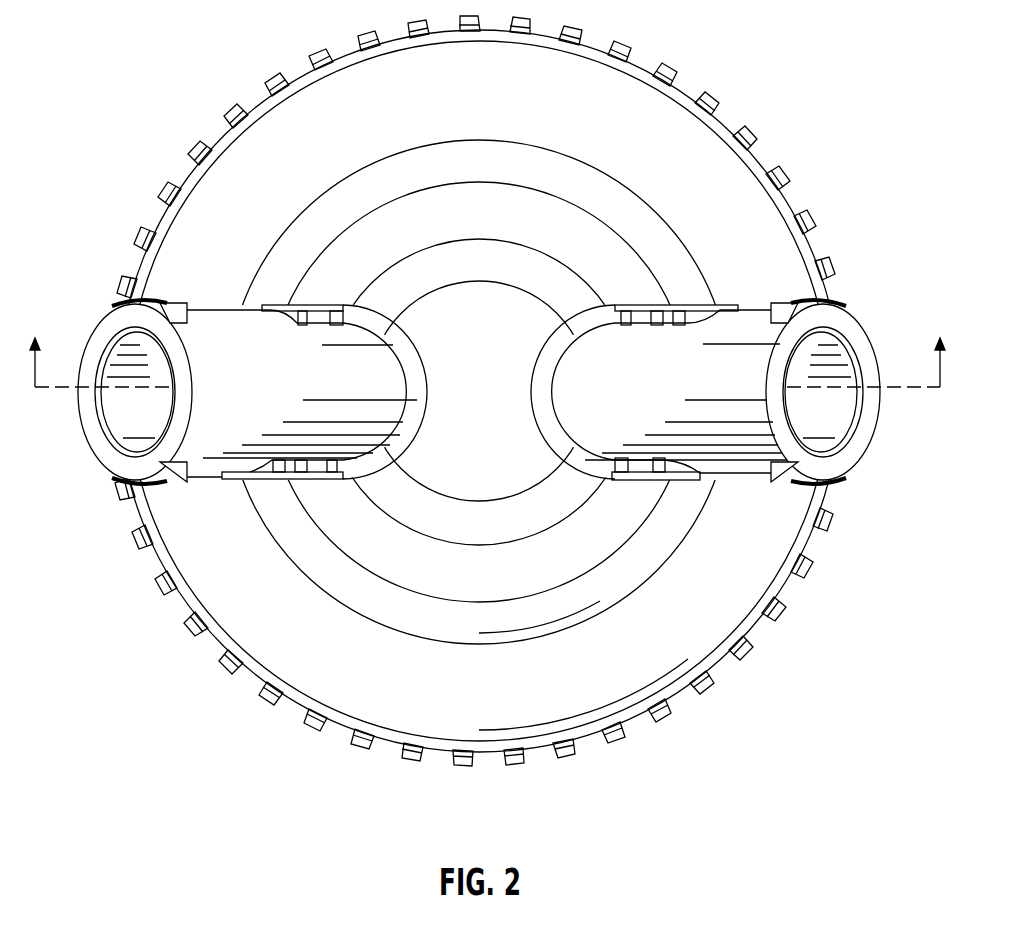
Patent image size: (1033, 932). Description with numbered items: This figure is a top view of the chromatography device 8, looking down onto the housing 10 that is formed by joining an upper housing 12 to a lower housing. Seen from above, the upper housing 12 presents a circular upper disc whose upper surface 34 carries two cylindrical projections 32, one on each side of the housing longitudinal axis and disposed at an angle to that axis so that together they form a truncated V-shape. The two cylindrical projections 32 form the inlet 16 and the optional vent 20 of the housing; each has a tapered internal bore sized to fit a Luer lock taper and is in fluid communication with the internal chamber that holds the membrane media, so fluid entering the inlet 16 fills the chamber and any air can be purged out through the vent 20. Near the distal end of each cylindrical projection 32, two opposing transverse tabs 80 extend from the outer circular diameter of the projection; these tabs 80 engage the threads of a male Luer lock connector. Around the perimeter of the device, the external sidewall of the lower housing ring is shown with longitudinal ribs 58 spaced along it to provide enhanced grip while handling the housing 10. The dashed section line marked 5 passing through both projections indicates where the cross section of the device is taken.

The chromatography device 8 is at (488, 389).
The housing 10 is at (162, 586).
The upper housing 12 is at (479, 391).
The inlet 16 is at (122, 405).
The vent 20 is at (825, 353).
The cylindrical projections 32 is at (262, 382).
The upper surface 34 is at (462, 112).
The longitudinal ribs 58 is at (465, 391).
The transverse tabs 80 is at (125, 304).
The section line 5- 5 is at (488, 348).